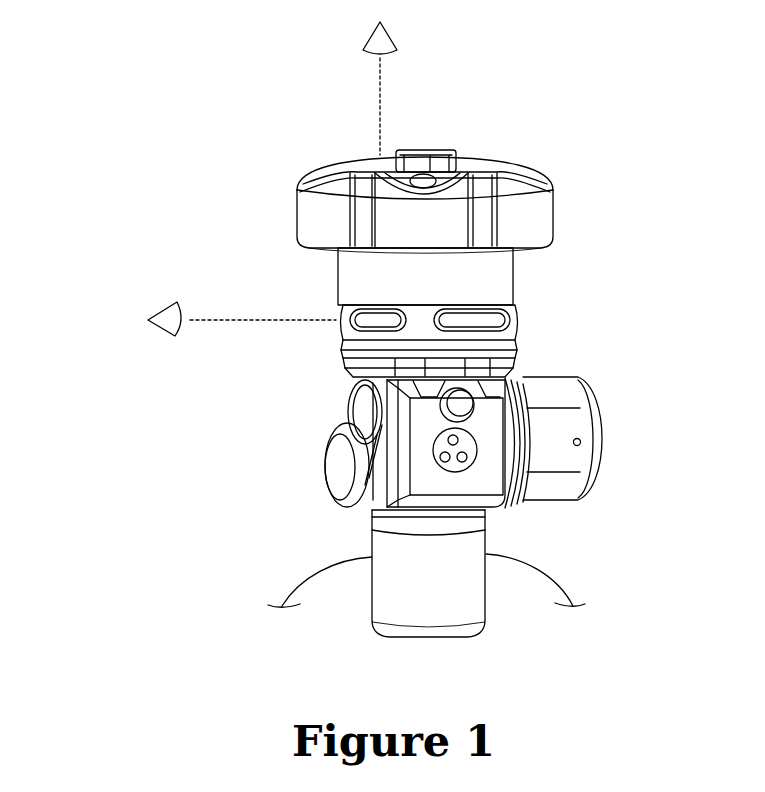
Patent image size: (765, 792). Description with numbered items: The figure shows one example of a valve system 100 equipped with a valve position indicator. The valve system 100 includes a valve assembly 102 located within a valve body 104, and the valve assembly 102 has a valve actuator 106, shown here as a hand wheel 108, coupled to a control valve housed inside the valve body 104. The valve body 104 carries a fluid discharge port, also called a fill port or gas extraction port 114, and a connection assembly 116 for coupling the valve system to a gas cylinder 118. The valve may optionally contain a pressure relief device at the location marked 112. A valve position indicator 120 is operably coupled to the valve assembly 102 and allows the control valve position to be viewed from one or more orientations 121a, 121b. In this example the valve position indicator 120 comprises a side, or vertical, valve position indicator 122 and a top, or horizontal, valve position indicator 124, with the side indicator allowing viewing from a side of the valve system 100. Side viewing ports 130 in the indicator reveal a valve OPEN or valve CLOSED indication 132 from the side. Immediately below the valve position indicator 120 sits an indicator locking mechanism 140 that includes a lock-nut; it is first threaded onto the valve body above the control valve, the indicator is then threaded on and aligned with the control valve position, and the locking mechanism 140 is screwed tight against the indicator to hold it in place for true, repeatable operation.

The valve system 100 is at (243, 135).
The valve assembly 102 is at (447, 143).
The valve body 104 is at (268, 370).
The valve actuator 106 is at (362, 153).
The hand wheel 108 is at (553, 202).
The pressure relief device location 112 is at (318, 487).
The gas extraction port 114 is at (620, 427).
The connection assembly 116 is at (368, 603).
The gas cylinder 118 is at (295, 568).
The valve position indicator 120 is at (170, 215).
The orientation 121a is at (390, 25).
The orientation 121b is at (158, 325).
The side valve position indicator 122 is at (315, 276).
The top valve position indicator 124 is at (348, 140).
The side viewing ports 130 is at (345, 343).
The valve OPEN or valve CLOSED indication 132 is at (512, 315).
The indicator locking mechanism 140 is at (345, 375).